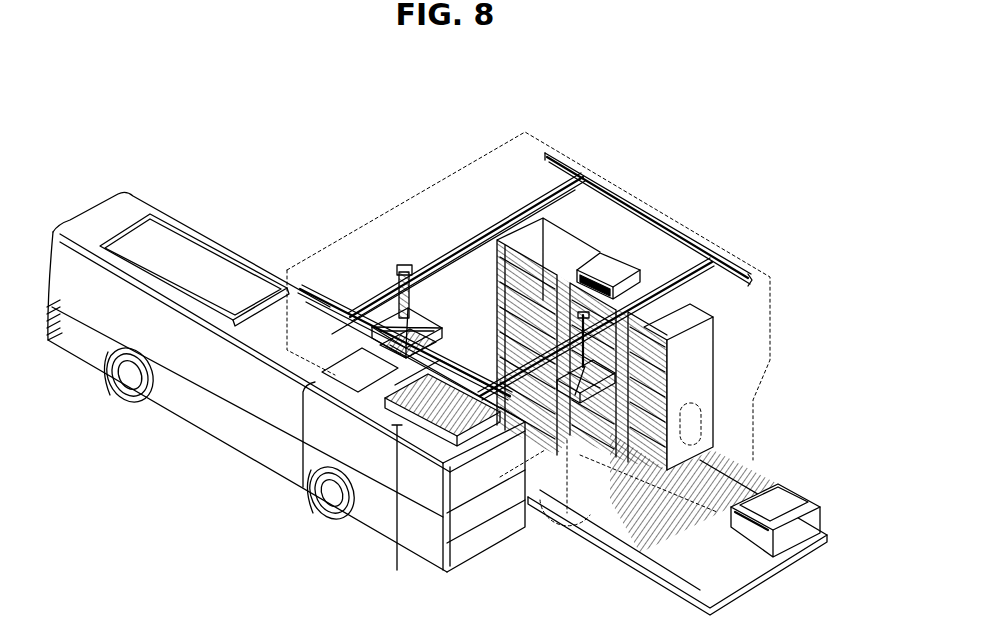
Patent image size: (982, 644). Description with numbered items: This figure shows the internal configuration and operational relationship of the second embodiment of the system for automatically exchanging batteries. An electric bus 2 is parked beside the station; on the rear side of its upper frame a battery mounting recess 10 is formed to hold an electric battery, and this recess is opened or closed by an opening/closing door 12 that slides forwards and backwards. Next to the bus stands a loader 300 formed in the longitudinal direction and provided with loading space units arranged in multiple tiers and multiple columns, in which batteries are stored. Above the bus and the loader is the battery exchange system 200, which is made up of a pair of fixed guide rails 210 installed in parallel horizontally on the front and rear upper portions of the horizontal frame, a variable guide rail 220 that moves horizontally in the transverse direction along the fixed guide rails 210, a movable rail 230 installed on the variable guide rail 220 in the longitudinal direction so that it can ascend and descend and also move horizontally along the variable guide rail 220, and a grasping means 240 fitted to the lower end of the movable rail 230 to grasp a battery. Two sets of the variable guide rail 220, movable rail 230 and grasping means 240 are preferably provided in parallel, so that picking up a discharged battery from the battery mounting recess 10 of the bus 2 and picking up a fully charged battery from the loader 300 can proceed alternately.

The bus 2 is at (218, 432).
The battery mounting recess 10 is at (397, 500).
The opening/closing door 12 is at (303, 392).
The battery exchange system 200 is at (565, 257).
The fixed guide rails 210 is at (678, 222).
The variable guide rail 220 is at (508, 215).
The movable rail 230 is at (416, 293).
The grasping means 240 is at (380, 318).
The loader 300 is at (713, 357).